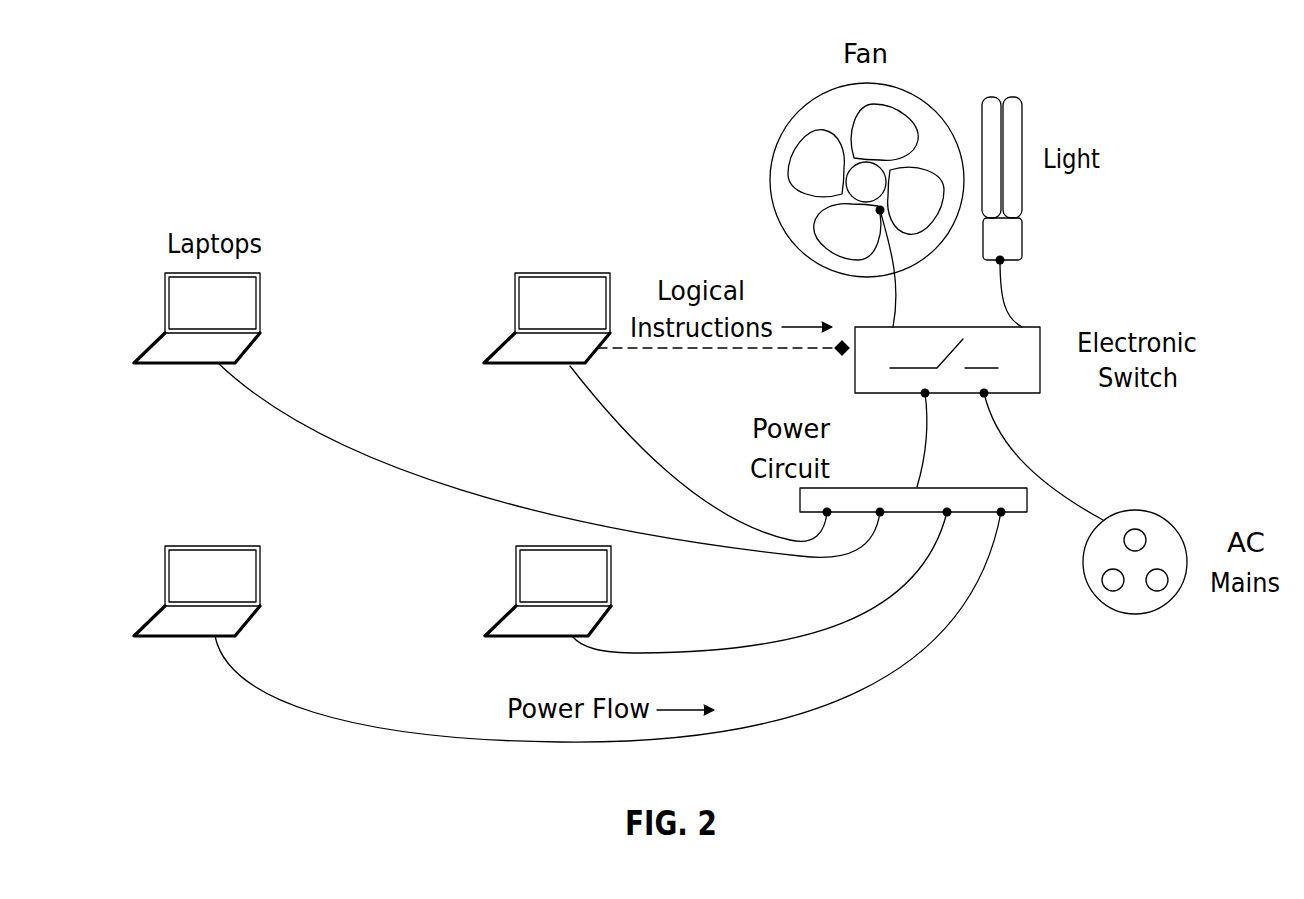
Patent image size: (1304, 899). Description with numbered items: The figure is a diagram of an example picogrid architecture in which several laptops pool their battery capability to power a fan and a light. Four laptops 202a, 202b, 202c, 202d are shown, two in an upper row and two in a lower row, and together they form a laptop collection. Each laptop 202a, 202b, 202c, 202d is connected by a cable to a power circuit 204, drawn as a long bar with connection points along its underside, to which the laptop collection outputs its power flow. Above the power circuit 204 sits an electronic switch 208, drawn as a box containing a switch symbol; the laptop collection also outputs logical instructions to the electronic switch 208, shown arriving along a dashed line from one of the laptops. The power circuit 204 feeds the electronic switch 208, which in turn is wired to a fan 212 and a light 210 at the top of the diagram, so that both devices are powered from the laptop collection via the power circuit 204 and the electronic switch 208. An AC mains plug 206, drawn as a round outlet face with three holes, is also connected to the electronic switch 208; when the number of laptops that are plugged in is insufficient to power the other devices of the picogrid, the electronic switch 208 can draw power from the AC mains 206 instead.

The laptop 202a is at (500, 348).
The laptop 202b is at (150, 348).
The laptop 202c is at (501, 621).
The laptop 202d is at (150, 621).
The power circuit 204 is at (1022, 513).
The AC mains 206 is at (1152, 513).
The electronic switch 208 is at (1017, 395).
The light 210 is at (1022, 127).
The fan 212 is at (797, 112).